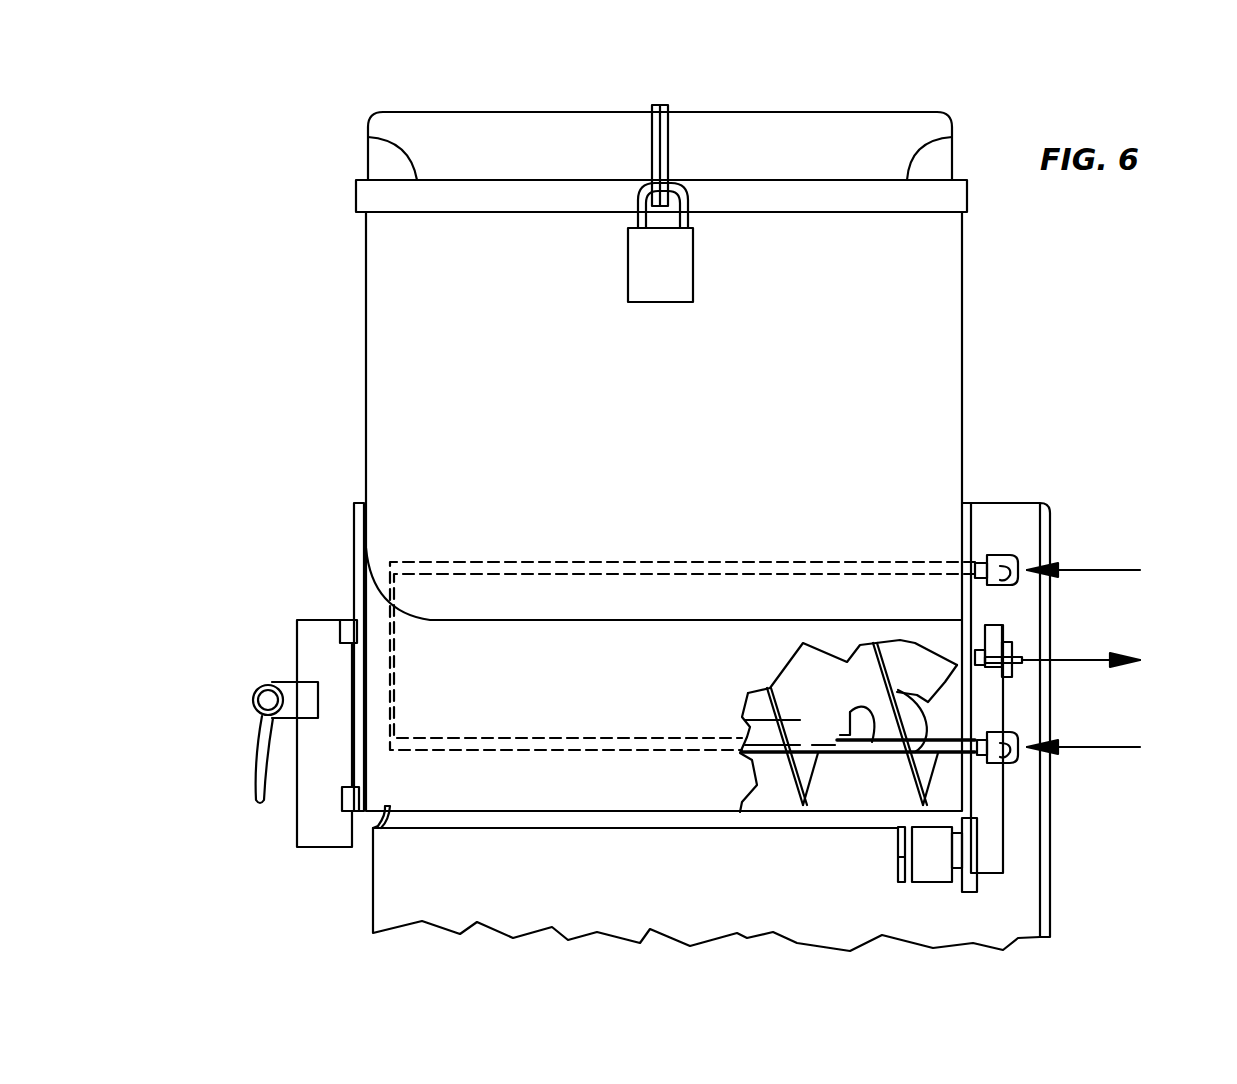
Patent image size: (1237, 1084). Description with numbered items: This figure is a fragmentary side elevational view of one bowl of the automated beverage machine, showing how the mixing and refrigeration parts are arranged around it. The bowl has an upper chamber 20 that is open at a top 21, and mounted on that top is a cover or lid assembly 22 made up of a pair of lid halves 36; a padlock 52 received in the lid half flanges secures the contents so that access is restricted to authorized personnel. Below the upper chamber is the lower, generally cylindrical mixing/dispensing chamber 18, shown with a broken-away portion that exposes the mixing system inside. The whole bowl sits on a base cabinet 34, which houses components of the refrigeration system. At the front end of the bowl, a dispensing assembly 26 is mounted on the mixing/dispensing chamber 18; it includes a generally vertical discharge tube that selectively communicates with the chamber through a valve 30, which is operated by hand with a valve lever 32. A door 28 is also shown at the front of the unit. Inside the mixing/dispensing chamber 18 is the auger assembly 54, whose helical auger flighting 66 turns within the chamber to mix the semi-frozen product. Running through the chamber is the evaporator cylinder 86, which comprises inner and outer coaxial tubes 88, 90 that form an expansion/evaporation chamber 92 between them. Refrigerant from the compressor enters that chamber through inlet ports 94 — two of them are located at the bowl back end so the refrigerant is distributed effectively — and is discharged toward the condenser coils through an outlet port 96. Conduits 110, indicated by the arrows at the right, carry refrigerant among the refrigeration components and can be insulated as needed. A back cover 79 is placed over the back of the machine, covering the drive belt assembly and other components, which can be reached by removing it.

The lower mixing/dispensing chamber 18 is at (470, 705).
The upper chamber 20 is at (432, 298).
The top 21 is at (560, 170).
The cover or lid assembly 22 is at (380, 112).
The dispensing assembly 26 is at (291, 614).
The door 28 is at (347, 765).
The valve 30 is at (257, 690).
The valve lever 32 is at (259, 782).
The base cabinet 34 is at (463, 883).
The lid half 36 is at (708, 112).
The padlock 52 is at (693, 300).
The auger assembly 54 is at (789, 692).
The helical auger flighting 66 is at (755, 742).
The back cover 79 is at (1052, 828).
The evaporator cylinder 86 is at (742, 768).
The inner coaxial tube 88 is at (873, 712).
The outer coaxial tube 90 is at (890, 756).
The expansion/evaporation chamber 92 is at (887, 700).
The inlet port 94 is at (978, 565).
The outlet port 96 is at (980, 650).
The conduits 110 is at (1019, 570).